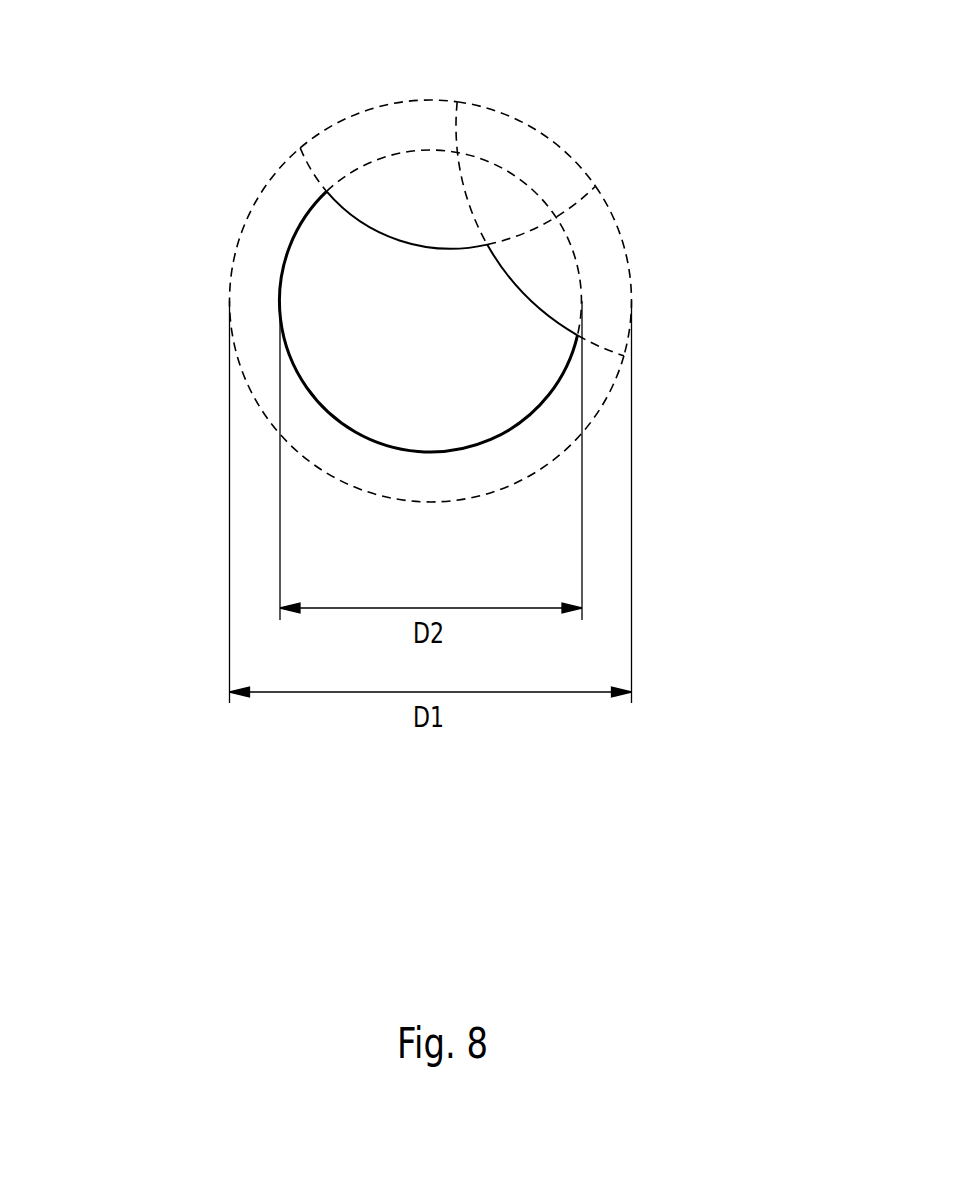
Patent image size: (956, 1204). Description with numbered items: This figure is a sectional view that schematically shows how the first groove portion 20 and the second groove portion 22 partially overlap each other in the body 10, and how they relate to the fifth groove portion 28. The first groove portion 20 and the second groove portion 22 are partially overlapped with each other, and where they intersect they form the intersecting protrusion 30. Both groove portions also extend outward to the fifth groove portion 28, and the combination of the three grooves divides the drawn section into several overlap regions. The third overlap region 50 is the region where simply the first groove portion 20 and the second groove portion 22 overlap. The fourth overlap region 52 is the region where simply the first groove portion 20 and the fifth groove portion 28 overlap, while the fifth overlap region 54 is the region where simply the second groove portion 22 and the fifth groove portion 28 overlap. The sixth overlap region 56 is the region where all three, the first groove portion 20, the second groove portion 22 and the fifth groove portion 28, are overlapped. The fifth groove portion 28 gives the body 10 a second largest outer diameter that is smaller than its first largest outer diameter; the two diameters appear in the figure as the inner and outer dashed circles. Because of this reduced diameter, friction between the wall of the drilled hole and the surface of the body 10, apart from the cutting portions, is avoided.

The body 10 is at (317, 330).
The first groove portion 20 is at (400, 195).
The second groove portion 22 is at (547, 277).
The fifth groove portion 28 is at (265, 355).
The intersecting protrusion 30 is at (487, 245).
The third overlap region 50 is at (490, 195).
The fourth overlap region 52 is at (368, 142).
The fifth overlap region 54 is at (597, 252).
The sixth overlap region 56 is at (474, 137).